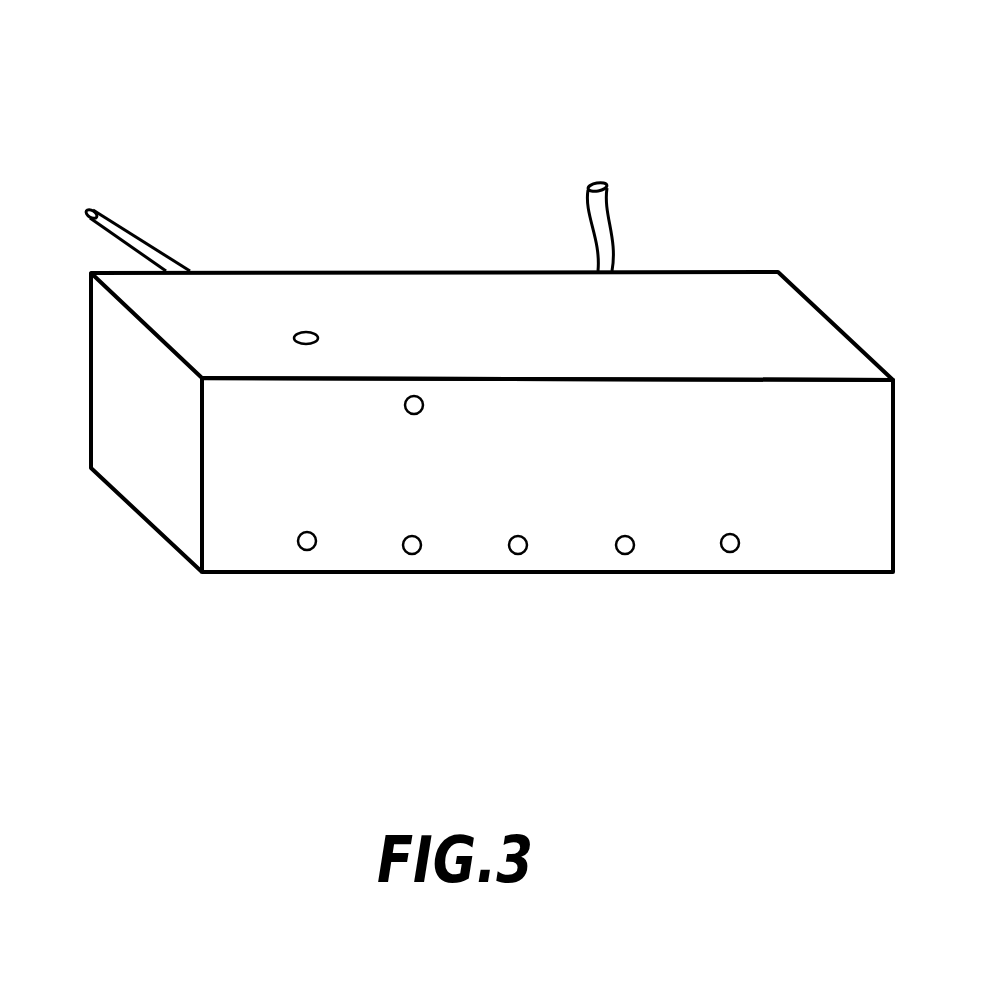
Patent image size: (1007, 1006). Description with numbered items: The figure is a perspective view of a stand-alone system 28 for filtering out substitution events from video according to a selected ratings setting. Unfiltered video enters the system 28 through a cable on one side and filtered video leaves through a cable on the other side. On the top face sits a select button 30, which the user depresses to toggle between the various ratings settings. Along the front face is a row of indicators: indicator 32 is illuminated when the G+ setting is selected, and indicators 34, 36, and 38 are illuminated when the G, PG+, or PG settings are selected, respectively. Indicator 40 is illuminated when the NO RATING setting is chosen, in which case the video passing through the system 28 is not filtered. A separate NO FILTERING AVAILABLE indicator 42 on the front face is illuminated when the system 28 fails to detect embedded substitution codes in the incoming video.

The stand-alone system 28 is at (333, 42).
The select button 30 is at (302, 330).
The indicator 32 is at (307, 551).
The indicator 34 is at (412, 554).
The indicator 36 is at (520, 554).
The indicator 38 is at (628, 554).
The indicator 40 is at (731, 552).
The NO FILTERING AVAILABLE indicator 42 is at (424, 400).